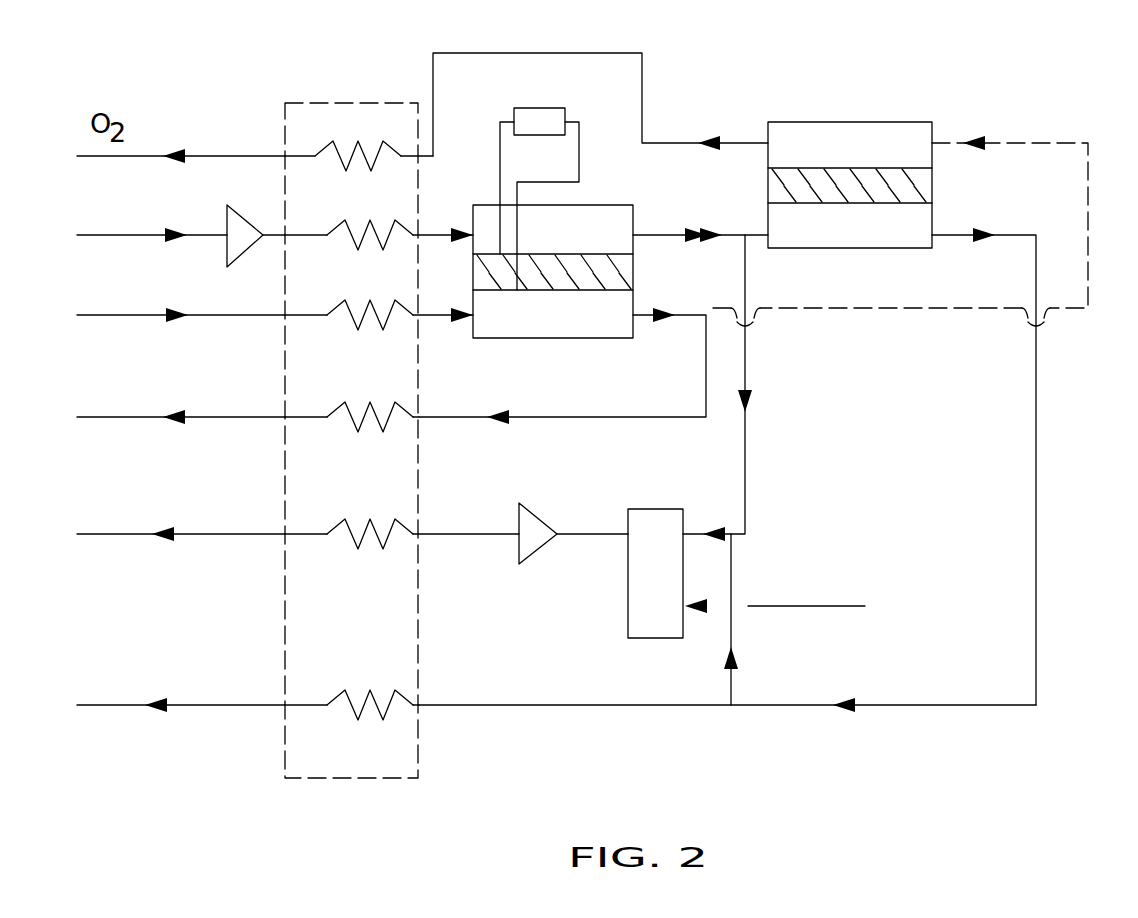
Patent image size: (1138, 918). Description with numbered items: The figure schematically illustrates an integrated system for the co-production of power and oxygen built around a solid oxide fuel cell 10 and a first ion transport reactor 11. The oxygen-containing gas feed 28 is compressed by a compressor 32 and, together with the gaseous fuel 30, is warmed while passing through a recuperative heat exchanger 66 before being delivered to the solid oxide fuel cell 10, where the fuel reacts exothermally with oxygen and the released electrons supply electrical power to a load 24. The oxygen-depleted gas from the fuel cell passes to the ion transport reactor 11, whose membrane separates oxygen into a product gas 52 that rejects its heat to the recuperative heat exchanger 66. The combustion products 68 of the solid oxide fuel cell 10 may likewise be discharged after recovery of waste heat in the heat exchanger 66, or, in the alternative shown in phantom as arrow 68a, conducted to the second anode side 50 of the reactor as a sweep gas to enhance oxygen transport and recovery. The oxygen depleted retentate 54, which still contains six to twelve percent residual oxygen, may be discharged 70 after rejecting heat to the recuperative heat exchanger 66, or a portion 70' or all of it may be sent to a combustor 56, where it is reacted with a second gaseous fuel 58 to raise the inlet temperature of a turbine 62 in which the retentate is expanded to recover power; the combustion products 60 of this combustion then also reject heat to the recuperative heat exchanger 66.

The solid oxide fuel cell 10 is at (535, 345).
The first ion transport reactor 11 is at (872, 110).
The load 24 is at (520, 108).
The oxygen-containing gas feed 28 is at (132, 238).
The gaseous fuel 30 is at (135, 320).
The compressor 32 is at (248, 217).
The second anode side 50 is at (790, 158).
The product gas 52 is at (530, 53).
The oxygen depleted retentate 54 is at (1037, 592).
The combustor 56 is at (642, 606).
The second gaseous fuel 58 is at (800, 606).
The combustion products of combustor 60 is at (452, 536).
The turbine 62 is at (535, 522).
The recuperative heat exchanger 66 is at (297, 118).
The combustion products of solid oxide fuel cell 68 is at (560, 417).
The sweep gas arrow 68a is at (1032, 143).
The discharge 70 is at (556, 740).
The portion of oxygen depleted retentate 70' is at (768, 619).